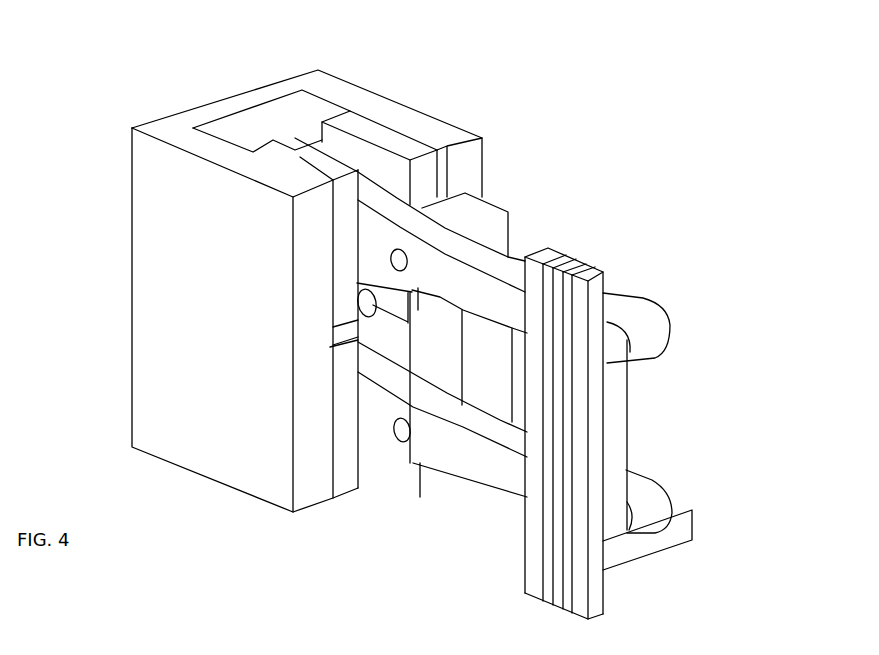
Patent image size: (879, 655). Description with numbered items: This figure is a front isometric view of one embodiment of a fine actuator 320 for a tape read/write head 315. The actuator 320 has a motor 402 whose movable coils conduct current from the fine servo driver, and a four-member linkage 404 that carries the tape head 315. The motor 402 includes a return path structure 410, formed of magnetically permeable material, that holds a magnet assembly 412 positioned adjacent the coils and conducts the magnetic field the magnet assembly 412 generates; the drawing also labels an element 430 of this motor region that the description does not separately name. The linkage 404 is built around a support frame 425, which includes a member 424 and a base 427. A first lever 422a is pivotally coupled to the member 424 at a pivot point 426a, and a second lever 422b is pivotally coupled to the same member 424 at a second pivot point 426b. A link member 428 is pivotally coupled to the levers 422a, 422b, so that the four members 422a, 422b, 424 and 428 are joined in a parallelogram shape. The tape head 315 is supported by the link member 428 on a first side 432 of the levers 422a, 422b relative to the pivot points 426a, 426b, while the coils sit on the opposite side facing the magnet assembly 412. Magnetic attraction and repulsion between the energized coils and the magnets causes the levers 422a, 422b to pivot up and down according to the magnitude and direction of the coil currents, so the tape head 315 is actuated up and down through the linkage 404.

The fine actuator 320 is at (130, 96).
The motor 402 is at (255, 94).
The 4-member linkage 404 is at (647, 308).
The return path structure 410 is at (130, 331).
The magnet assembly 412 is at (410, 137).
The first lever 422a is at (428, 227).
The second lever 422b is at (448, 445).
The member 424 is at (493, 237).
The support frame 425 is at (487, 200).
The pivot point 426a is at (398, 262).
The second pivot point 426b is at (400, 438).
The base 427 is at (683, 533).
The link member 428 is at (613, 408).
The plate 430 is at (368, 123).
The first side 432 is at (517, 253).
The tape read/write head 315 is at (597, 273).